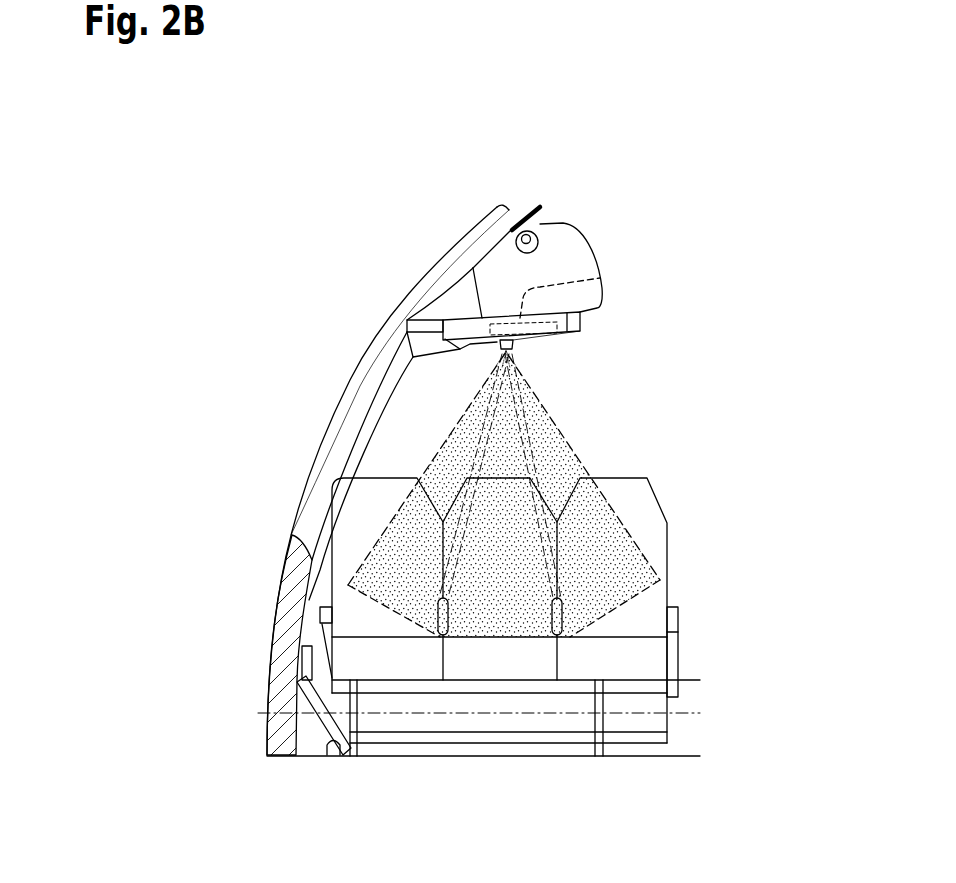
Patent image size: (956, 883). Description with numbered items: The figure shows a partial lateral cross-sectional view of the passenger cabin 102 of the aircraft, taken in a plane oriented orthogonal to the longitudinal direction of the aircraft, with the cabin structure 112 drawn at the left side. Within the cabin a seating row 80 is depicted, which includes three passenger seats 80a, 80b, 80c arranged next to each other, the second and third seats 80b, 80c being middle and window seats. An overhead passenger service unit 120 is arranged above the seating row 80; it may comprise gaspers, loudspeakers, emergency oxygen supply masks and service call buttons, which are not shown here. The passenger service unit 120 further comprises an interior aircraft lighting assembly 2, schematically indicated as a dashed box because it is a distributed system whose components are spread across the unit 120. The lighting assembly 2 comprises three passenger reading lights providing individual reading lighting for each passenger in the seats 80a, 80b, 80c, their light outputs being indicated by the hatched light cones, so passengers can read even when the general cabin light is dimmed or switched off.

The passenger cabin 102 is at (345, 272).
The sensor housing 112 is at (607, 243).
The interior aircraft lighting assembly 2 is at (605, 278).
The overhead passenger service unit 120 is at (541, 345).
The seating row 80 is at (702, 510).
The passenger seat 80a is at (675, 470).
The passenger seat 80b is at (495, 667).
The passenger seat 80c is at (393, 473).